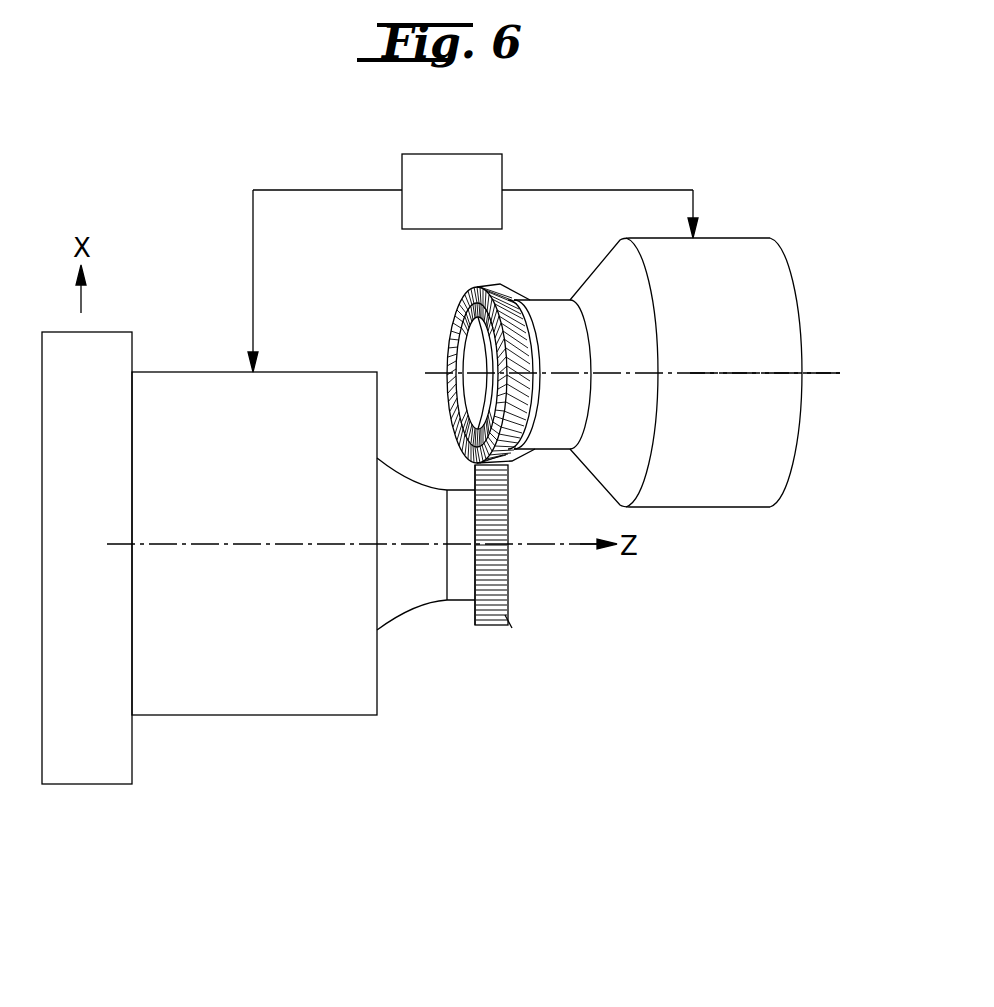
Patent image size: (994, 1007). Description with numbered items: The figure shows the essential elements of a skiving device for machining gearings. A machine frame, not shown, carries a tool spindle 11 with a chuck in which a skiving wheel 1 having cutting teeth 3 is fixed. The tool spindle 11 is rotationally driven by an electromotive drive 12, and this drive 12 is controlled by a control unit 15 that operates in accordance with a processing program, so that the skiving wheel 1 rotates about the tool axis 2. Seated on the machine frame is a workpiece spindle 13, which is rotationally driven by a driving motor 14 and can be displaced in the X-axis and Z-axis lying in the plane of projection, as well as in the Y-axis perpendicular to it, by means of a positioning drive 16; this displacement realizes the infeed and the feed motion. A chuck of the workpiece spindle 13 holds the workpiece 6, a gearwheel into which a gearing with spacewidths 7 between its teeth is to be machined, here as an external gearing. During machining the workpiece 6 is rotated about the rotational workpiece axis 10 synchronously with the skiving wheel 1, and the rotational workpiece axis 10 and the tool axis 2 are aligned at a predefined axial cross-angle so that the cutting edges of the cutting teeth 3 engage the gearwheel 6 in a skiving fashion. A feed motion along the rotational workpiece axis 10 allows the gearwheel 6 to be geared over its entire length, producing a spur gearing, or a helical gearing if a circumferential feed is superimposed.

The skiving wheel 1 is at (528, 293).
The tool axis 2 is at (773, 368).
The cutting teeth 3 is at (500, 283).
The workpiece 6 is at (516, 638).
The spacewidths 7 is at (491, 565).
The rotational workpiece axis 10 is at (535, 547).
The tool spindle 11 is at (548, 308).
The electromotive drive 12 is at (705, 265).
The workpiece spindle 13 is at (398, 573).
The driving motor 14 is at (343, 677).
The control unit 15 is at (434, 208).
The positioning drive 16 is at (85, 745).